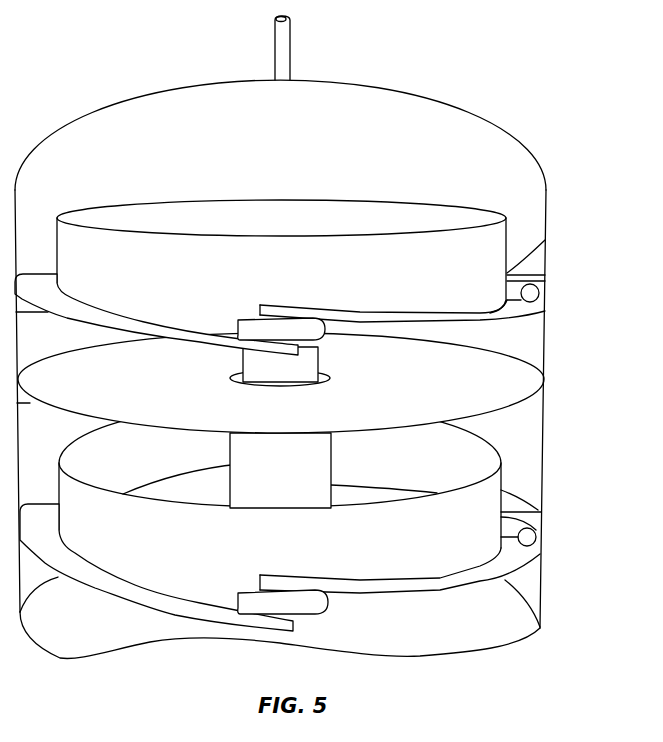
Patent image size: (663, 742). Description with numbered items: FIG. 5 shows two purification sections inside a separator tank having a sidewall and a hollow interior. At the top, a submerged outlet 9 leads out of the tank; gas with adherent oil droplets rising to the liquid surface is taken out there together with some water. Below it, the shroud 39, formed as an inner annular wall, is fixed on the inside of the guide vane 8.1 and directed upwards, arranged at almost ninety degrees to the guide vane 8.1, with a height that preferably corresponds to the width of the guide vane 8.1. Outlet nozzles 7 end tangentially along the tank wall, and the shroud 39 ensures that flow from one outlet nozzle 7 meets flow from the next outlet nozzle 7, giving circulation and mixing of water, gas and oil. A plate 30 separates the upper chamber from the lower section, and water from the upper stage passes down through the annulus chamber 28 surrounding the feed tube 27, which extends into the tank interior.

The submerged outlet 9 is at (285, 52).
The shroud 39 is at (493, 237).
The guide vane 8.1 is at (520, 280).
The outlet nozzle 7 is at (538, 290).
The feed tube 27 is at (286, 378).
The plate 30 is at (457, 385).
The annulus chamber 28 is at (294, 482).